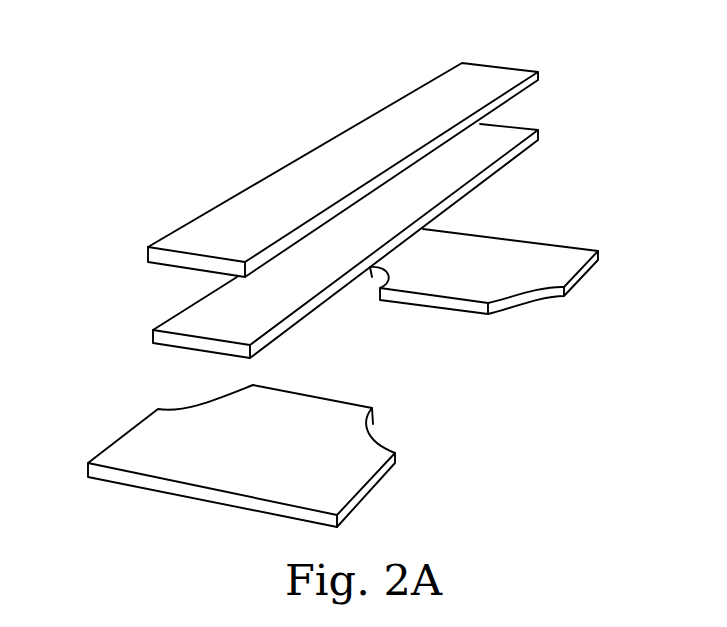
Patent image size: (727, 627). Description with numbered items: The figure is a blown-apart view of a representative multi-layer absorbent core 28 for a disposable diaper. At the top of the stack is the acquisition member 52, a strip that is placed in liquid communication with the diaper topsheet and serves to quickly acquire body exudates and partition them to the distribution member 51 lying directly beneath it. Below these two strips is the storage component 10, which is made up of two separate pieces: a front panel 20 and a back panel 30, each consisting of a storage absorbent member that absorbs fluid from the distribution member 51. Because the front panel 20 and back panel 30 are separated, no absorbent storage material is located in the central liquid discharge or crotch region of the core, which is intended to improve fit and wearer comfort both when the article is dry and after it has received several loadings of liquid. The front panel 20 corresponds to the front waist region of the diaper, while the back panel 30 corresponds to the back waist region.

The storage component 10 is at (367, 517).
The front panel 20 is at (553, 260).
The absorbent core 28 is at (150, 132).
The back panel 30 is at (128, 453).
The distribution member 51 is at (513, 137).
The acquisition member 52 is at (507, 77).